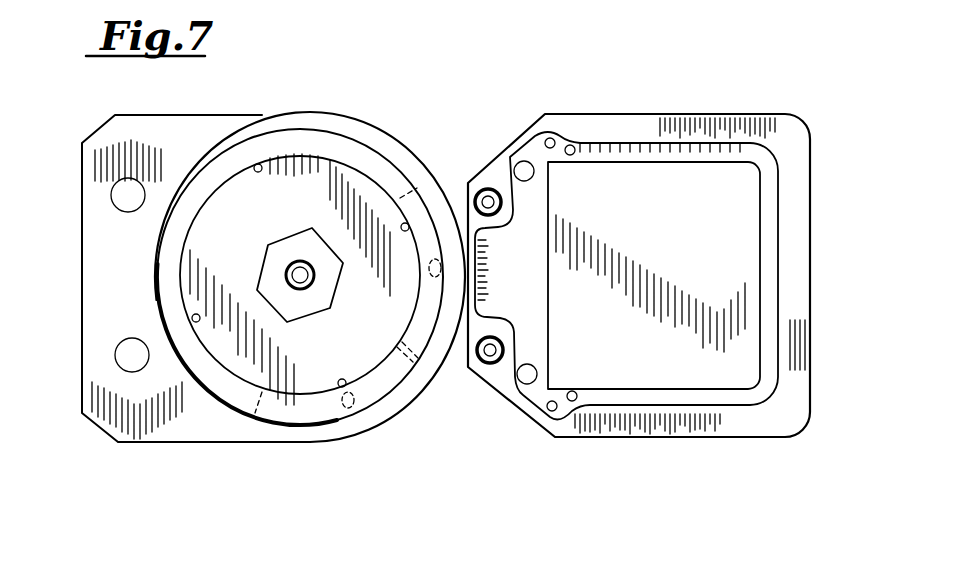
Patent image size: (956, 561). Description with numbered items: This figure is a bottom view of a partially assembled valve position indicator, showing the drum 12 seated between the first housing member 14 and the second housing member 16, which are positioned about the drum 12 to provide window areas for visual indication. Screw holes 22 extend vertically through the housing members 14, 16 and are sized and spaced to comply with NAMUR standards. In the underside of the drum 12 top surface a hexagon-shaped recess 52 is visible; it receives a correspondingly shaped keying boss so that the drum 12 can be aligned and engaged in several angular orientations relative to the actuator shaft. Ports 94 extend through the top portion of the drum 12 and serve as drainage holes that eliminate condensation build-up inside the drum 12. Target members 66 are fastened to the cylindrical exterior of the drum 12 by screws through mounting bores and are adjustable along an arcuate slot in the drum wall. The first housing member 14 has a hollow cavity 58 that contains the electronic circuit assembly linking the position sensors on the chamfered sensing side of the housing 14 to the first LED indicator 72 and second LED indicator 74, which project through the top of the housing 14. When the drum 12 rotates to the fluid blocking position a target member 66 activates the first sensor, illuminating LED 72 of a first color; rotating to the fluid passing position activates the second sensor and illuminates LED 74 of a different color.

The drum 12 is at (342, 170).
The first housing member 14 is at (795, 215).
The second housing member 16 is at (100, 284).
The screw holes 22 is at (126, 358).
The hexagon-shaped recess 52 is at (303, 243).
The hollow cavity 58 is at (620, 362).
The target member 66 is at (428, 262).
The first LED indicator 72 is at (522, 378).
The second LED indicator 74 is at (530, 170).
The ports 94 is at (258, 164).